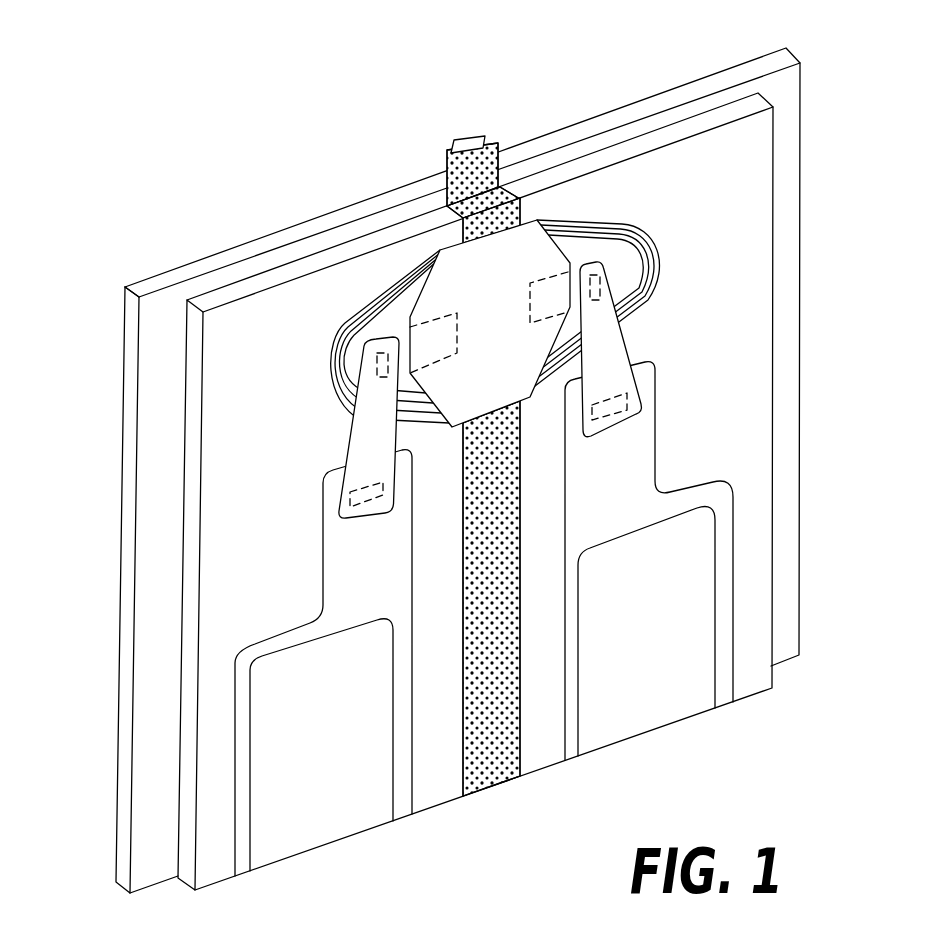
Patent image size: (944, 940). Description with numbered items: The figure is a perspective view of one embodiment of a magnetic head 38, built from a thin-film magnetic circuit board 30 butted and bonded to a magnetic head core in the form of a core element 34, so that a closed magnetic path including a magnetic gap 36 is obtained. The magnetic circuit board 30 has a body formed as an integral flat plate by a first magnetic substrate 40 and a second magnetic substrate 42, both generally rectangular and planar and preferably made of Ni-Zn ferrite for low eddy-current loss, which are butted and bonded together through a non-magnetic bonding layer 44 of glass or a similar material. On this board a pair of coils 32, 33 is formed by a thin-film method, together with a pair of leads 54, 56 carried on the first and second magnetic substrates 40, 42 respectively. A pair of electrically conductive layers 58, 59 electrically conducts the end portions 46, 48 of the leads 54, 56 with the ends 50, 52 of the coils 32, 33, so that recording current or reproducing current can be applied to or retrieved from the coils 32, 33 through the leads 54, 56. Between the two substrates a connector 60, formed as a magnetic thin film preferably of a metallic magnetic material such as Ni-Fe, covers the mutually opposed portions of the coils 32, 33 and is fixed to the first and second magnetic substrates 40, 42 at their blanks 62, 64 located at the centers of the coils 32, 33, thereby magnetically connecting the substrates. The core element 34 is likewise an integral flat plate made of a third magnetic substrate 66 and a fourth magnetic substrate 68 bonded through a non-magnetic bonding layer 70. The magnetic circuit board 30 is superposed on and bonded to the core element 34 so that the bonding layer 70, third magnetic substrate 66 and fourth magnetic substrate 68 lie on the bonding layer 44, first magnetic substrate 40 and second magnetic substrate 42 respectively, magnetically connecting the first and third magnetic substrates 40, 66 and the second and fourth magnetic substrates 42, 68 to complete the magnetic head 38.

The magnetic circuit board 30 is at (165, 567).
The coil 32 is at (362, 288).
The coil 33 is at (636, 212).
The magnetic head core 34 is at (108, 427).
The magnetic gap 36 is at (464, 118).
The magnetic head 38 is at (457, 464).
The first magnetic substrate 40 is at (222, 507).
The second magnetic substrate 42 is at (757, 335).
The non-magnetic bonding layer 44 is at (484, 790).
The end portion of lead 46 is at (362, 500).
The end portion of lead 48 is at (613, 417).
The end of coil 50 is at (377, 362).
The end of coil 52 is at (600, 281).
The lead 54 is at (340, 825).
The lead 56 is at (627, 710).
The electrically conductive layer 58 is at (367, 433).
The electrically conductive layer 59 is at (613, 338).
The connector 60 is at (535, 358).
The blank 62 is at (440, 318).
The blank 64 is at (547, 297).
The third magnetic substrate 66 is at (138, 837).
The fourth magnetic substrate 68 is at (783, 580).
The non-magnetic bonding layer 70 is at (495, 172).